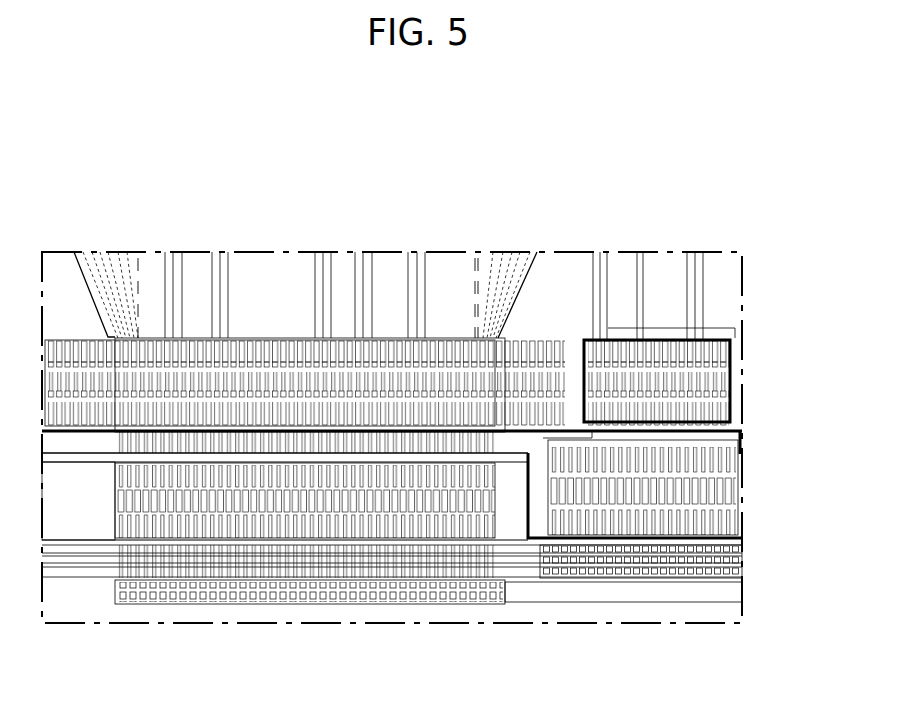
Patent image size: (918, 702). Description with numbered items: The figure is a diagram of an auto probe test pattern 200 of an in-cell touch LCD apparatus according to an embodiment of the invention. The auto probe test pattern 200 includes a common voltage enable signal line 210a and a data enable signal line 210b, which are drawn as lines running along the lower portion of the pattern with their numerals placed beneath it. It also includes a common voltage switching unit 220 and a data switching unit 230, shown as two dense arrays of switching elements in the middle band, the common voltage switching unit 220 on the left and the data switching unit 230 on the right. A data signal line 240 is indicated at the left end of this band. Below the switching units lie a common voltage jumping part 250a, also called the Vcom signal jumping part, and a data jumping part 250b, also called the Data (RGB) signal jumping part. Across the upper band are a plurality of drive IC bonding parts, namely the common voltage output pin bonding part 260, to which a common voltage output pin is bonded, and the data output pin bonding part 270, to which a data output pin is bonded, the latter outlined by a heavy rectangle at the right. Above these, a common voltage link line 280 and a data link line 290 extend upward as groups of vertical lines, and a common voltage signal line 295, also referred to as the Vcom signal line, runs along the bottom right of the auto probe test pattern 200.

The auto probe test pattern 200 is at (400, 148).
The common voltage enable signal line 210a is at (82, 508).
The data enable signal line 210b is at (533, 493).
The common voltage switching unit 220 is at (257, 510).
The data switching unit 230 is at (725, 502).
The data signal line 240 is at (60, 580).
The common voltage jumping part 250a is at (387, 599).
The data jumping part 250b is at (682, 578).
The common voltage output pin bonding part 260 is at (256, 367).
The data output pin bonding part 270 is at (723, 380).
The common voltage link line 280 is at (349, 264).
The data link line 290 is at (723, 297).
The common voltage signal line 295 is at (643, 597).